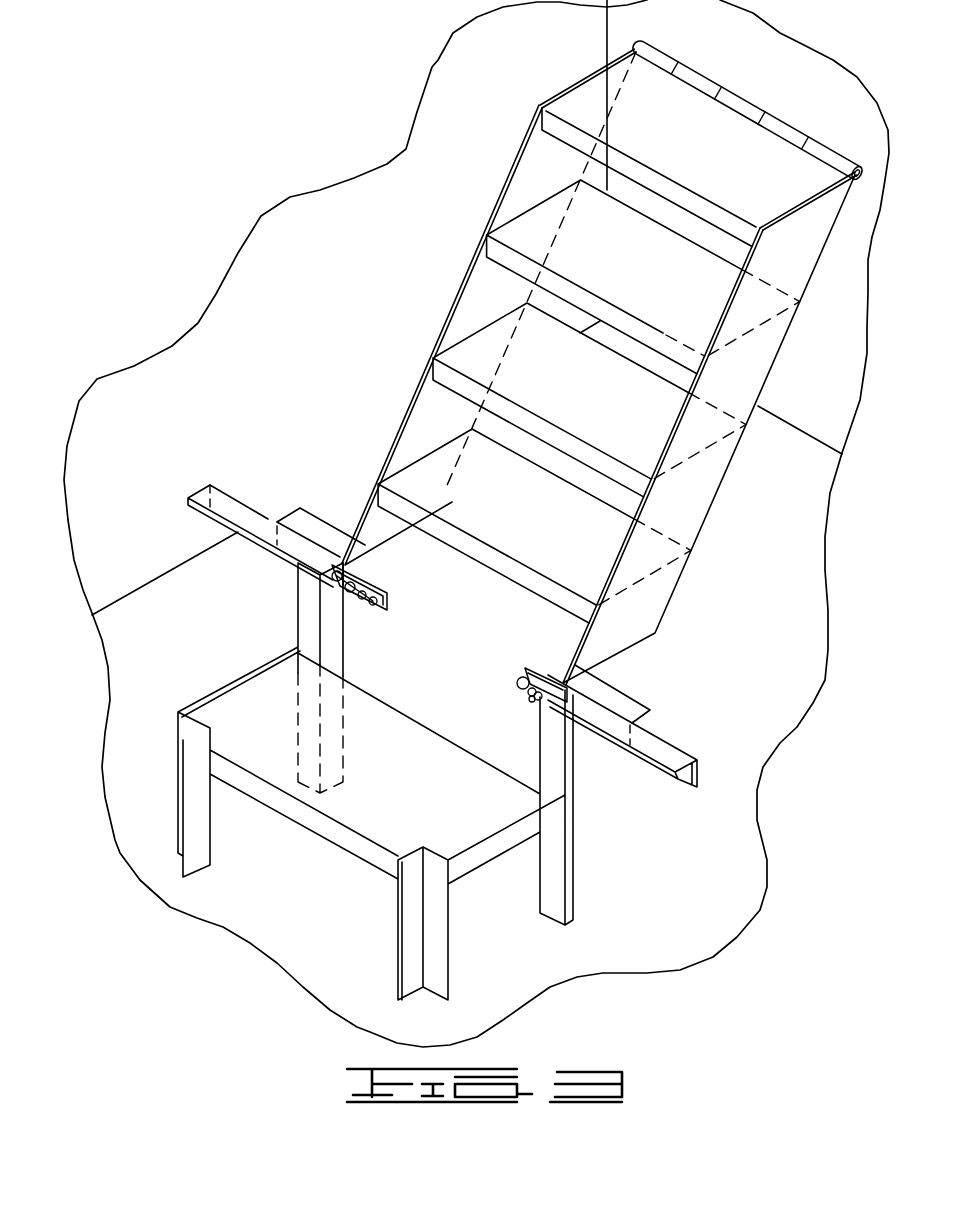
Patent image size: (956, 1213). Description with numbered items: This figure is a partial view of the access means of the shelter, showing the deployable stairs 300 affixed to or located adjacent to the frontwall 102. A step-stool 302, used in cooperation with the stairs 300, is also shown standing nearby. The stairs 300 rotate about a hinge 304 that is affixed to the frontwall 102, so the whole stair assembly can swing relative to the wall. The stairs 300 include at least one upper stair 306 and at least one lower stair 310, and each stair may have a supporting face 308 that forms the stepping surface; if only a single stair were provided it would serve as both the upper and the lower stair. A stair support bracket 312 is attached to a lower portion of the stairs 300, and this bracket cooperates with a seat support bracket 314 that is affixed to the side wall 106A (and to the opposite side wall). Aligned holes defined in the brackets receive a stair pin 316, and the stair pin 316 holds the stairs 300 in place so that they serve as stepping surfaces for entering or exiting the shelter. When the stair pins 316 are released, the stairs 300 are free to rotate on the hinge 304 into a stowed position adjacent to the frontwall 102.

The frontwall 102 is at (766, 52).
The side wall 106A is at (303, 388).
The stairs 300 is at (340, 242).
The step-stool 302 is at (268, 884).
The hinge 304 is at (748, 108).
The upper stair 306 is at (575, 103).
The supporting face 308 is at (555, 130).
The lower stair 310 is at (420, 472).
The stair support bracket 312 is at (615, 692).
The seat support bracket 314 is at (666, 746).
The stair pin 316 is at (340, 594).